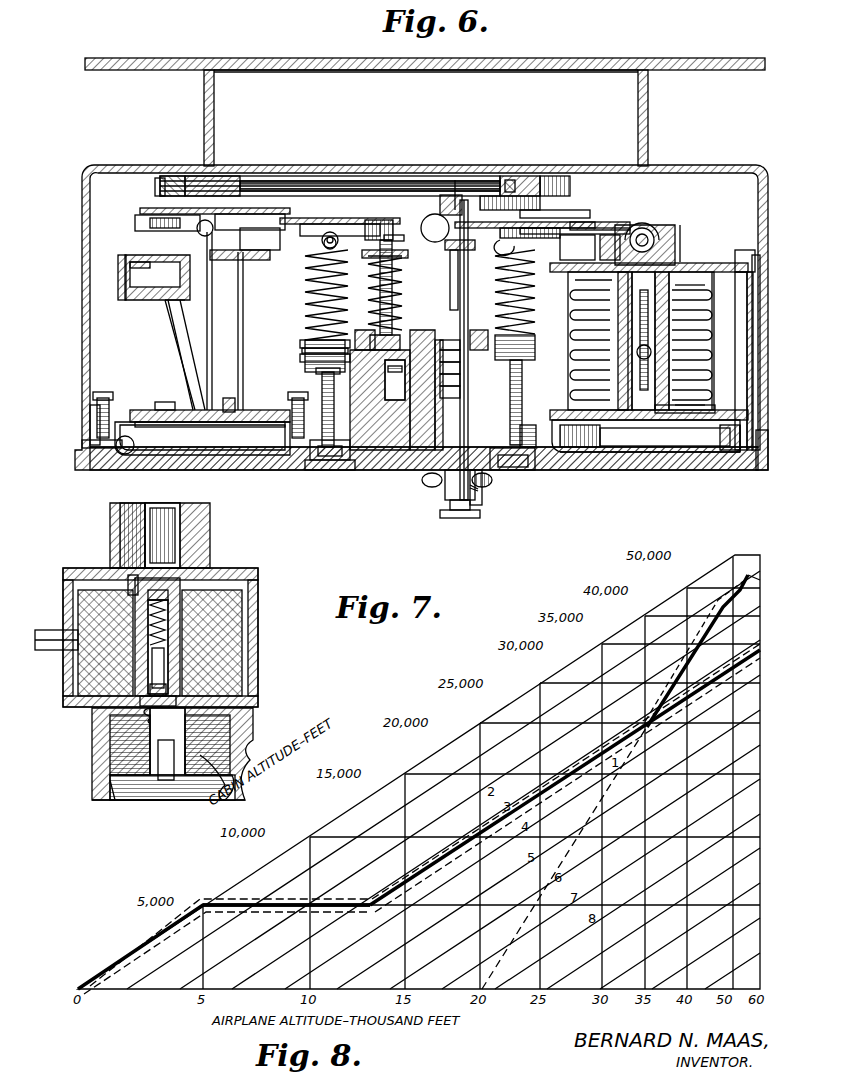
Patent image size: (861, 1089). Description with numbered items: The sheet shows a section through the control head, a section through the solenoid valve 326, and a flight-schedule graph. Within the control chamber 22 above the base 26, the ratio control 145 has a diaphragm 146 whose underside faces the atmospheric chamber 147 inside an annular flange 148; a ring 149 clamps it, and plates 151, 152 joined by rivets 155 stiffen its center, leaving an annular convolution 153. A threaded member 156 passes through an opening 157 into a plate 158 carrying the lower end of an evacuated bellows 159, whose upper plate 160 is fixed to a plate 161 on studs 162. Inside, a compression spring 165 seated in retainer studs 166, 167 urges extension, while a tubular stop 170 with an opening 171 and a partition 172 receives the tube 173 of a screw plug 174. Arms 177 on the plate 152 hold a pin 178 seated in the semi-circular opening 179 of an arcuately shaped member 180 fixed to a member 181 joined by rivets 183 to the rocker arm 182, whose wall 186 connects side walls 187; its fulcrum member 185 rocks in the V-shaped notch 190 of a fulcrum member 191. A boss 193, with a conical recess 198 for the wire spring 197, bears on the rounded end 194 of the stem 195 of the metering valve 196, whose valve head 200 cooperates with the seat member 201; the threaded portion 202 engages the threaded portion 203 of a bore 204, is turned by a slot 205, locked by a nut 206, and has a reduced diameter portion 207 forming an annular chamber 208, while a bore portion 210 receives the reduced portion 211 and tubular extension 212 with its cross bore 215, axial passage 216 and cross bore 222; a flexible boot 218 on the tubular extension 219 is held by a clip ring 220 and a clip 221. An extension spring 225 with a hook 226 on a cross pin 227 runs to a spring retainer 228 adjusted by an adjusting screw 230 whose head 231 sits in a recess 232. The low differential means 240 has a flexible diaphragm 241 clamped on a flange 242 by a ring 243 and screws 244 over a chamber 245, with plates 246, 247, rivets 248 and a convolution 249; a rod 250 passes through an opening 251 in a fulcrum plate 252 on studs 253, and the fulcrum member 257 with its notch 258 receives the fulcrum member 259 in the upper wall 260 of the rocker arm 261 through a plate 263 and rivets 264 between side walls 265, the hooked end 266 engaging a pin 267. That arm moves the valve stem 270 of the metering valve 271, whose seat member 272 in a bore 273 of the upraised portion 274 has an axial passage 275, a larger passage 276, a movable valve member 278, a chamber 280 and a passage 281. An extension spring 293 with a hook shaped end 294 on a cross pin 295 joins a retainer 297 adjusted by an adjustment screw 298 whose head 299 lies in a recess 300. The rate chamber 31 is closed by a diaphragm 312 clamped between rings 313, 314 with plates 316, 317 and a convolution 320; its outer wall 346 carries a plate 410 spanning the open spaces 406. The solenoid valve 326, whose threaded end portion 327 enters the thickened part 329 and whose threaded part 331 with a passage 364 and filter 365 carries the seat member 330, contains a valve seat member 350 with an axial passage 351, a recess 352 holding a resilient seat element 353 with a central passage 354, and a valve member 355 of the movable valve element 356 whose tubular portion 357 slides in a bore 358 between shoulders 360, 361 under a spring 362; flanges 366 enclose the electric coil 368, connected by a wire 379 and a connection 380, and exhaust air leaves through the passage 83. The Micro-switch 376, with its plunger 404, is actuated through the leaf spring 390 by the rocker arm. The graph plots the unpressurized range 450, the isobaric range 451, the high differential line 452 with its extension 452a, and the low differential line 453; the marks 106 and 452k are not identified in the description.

In FIG. 6, the housing 22 is at (122, 192).
In FIG. 6, the base plate 26 is at (628, 470).
In FIG. 6, the mounting panel 31 is at (572, 102).
In FIG. 7, the passage 83 is at (215, 790).
In FIG. 6, the bracket 106 is at (505, 260).
In FIG. 6, the casing wall 145 is at (712, 246).
In FIG. 6, the chamber 146 is at (600, 430).
In FIG. 6, the bottom wall 147 is at (672, 455).
In FIG. 6, the flange 148 is at (768, 433).
In FIG. 6, the wall 149 is at (738, 430).
In FIG. 6, the chamber wall 151 is at (706, 430).
In FIG. 6, the plate 152 is at (705, 395).
In FIG. 6, the partition 153 is at (745, 455).
In FIG. 6, the chamber plate 155 is at (665, 430).
In FIG. 6, the leaf spring stack 156 is at (700, 335).
In FIG. 6, the bottom plate 157 is at (580, 425).
In FIG. 6, the leaf 158 is at (705, 378).
In FIG. 6, the liner 159 is at (740, 265).
In FIG. 6, the spring cage 160 is at (568, 292).
In FIG. 6, the top plate 161 is at (696, 265).
In FIG. 6, the cage wall 162 is at (710, 300).
In FIG. 6, the casing wall 165 is at (762, 280).
In FIG. 6, the leaf springs 166 is at (705, 355).
In FIG. 6, the post 167 is at (683, 262).
In FIG. 6, the stem 170 is at (572, 350).
In FIG. 6, the leaf 171 is at (705, 318).
In FIG. 6, the guide 172 is at (574, 335).
In FIG. 6, the leaf springs 173 is at (575, 310).
In FIG. 6, the plate 174 is at (588, 230).
In FIG. 6, the bracket 177 is at (598, 222).
In FIG. 6, the roller bracket 178 is at (645, 228).
In FIG. 6, the roller 179 is at (642, 228).
In FIG. 6, the support 180 is at (645, 240).
In FIG. 6, the block 181 is at (575, 185).
In FIG. 6, the block 182 is at (522, 210).
In FIG. 6, the plate 183 is at (568, 210).
In FIG. 6, the block 185 is at (568, 246).
In FIG. 6, the block 186 is at (478, 176).
In FIG. 6, the insert 187 is at (508, 180).
In FIG. 6, the block 190 is at (603, 247).
In FIG. 6, the top leaf 191 is at (566, 280).
In FIG. 6, the block 193 is at (452, 195).
In FIG. 6, the plate 194 is at (452, 250).
In FIG. 6, the rod 195 is at (452, 280).
In FIG. 6, the block 196 is at (398, 335).
In FIG. 6, the rod 197 is at (440, 230).
In FIG. 6, the ring 198 is at (448, 232).
In FIG. 6, the valve seat 200 is at (473, 378).
In FIG. 6, the port 201 is at (482, 492).
In FIG. 6, the fitting 202 is at (452, 518).
In FIG. 6, the passage 203 is at (488, 495).
In FIG. 6, the nut 204 is at (455, 510).
In FIG. 6, the nipple 205 is at (460, 510).
In FIG. 6, the nipple 206 is at (492, 481).
In FIG. 6, the valve 207 is at (473, 403).
In FIG. 6, the body 208 is at (450, 500).
In FIG. 6, the valve rod 210 is at (460, 320).
In FIG. 6, the valve member 211 is at (473, 390).
In FIG. 6, the collar 212 is at (473, 353).
In FIG. 6, the collar 215 is at (473, 365).
In FIG. 6, the stem 216 is at (482, 505).
In FIG. 6, the link 218 is at (410, 335).
In FIG. 6, the pivot 219 is at (492, 345).
In FIG. 6, the sleeve 220 is at (440, 452).
In FIG. 6, the spring 221 is at (486, 330).
In FIG. 6, the adjusting screw 222 is at (524, 392).
In FIG. 6, the cage wall 225 is at (590, 322).
In FIG. 6, the plate 226 is at (560, 224).
In FIG. 6, the hook 227 is at (500, 246).
In FIG. 6, the bellows 228 is at (536, 350).
In FIG. 6, the nut 230 is at (545, 465).
In FIG. 6, the lock nut 231 is at (530, 468).
In FIG. 6, the washer 232 is at (520, 470).
In FIG. 6, the block 240 is at (126, 262).
In FIG. 6, the plate 241 is at (218, 424).
In FIG. 6, the pivot 242 is at (125, 455).
In FIG. 6, the flange 243 is at (90, 420).
In FIG. 6, the wall 244 is at (95, 405).
In FIG. 6, the chamber 245 is at (182, 455).
In FIG. 6, the plate 246 is at (180, 422).
In FIG. 6, the post 247 is at (228, 398).
In FIG. 6, the spacer 248 is at (180, 388).
In FIG. 6, the screw 249 is at (110, 395).
In FIG. 6, the rod 250 is at (240, 300).
In FIG. 6, the rod 251 is at (207, 270).
In FIG. 6, the plate 252 is at (318, 315).
In FIG. 6, the plate 253 is at (320, 345).
In FIG. 6, the plate 257 is at (262, 258).
In FIG. 6, the pivot 258 is at (324, 243).
In FIG. 6, the block 259 is at (270, 240).
In FIG. 6, the pivot 260 is at (338, 234).
In FIG. 6, the bracket 261 is at (154, 213).
In FIG. 6, the plate 263 is at (262, 214).
In FIG. 6, the plate 264 is at (295, 210).
In FIG. 6, the block 265 is at (392, 230).
In FIG. 6, the plate 266 is at (142, 214).
In FIG. 6, the pivot 267 is at (205, 220).
In FIG. 6, the spring 270 is at (372, 275).
In FIG. 6, the seat 271 is at (360, 330).
In FIG. 6, the plate 272 is at (318, 325).
In FIG. 6, the body 273 is at (380, 450).
In FIG. 6, the body 274 is at (395, 450).
In FIG. 6, the boss 275 is at (375, 452).
In FIG. 6, the stem 276 is at (394, 292).
In FIG. 6, the seat 278 is at (372, 290).
In FIG. 6, the chamber 280 is at (405, 452).
In FIG. 6, the valve 281 is at (418, 452).
In FIG. 6, the bellows 293 is at (310, 350).
In FIG. 6, the lever 294 is at (330, 226).
In FIG. 6, the spring 295 is at (290, 255).
In FIG. 6, the screw 297 is at (320, 384).
In FIG. 6, the screw 298 is at (292, 420).
In FIG. 6, the plate 299 is at (312, 472).
In FIG. 6, the nut 300 is at (322, 462).
In FIG. 6, the diaphragm 312 is at (345, 185).
In FIG. 6, the block 313 is at (176, 178).
In FIG. 6, the clamp 314 is at (170, 178).
In FIG. 6, the plate 316 is at (292, 185).
In FIG. 6, the plate 317 is at (392, 185).
In FIG. 6, the block 320 is at (235, 180).
In FIG. 7, the solenoid valve 326 is at (262, 580).
In FIG. 7, the threaded body 327 is at (115, 762).
In FIG. 7, the bottom 329 is at (105, 795).
In FIG. 7, the cap 330 is at (110, 522).
In FIG. 7, the thread 331 is at (118, 540).
In FIG. 6, the bracket 346 is at (500, 80).
In FIG. 7, the chamber 350 is at (140, 795).
In FIG. 7, the port 351 is at (162, 800).
In FIG. 7, the body 352 is at (120, 735).
In FIG. 7, the seat 353 is at (175, 726).
In FIG. 7, the wall 354 is at (118, 800).
In FIG. 7, the valve 355 is at (175, 718).
In FIG. 7, the valve head 356 is at (180, 690).
In FIG. 7, the stem 357 is at (190, 670).
In FIG. 7, the plate 358 is at (185, 708).
In FIG. 7, the spring 360 is at (175, 640).
In FIG. 7, the plunger 361 is at (178, 590).
In FIG. 7, the seat 362 is at (172, 605).
In FIG. 7, the bore 364 is at (175, 540).
In FIG. 7, the sleeve 365 is at (128, 580).
In FIG. 7, the end plates 366 is at (68, 570).
In FIG. 7, the coil 368 is at (100, 668).
In FIG. 6, the arm 376 is at (168, 305).
In FIG. 7, the lead 379 is at (45, 632).
In FIG. 7, the coil 380 is at (100, 655).
In FIG. 6, the lever 390 is at (180, 345).
In FIG. 6, the block 404 is at (160, 295).
In FIG. 6, the panel 406 is at (138, 104).
In FIG. 6, the mounting plate 410 is at (208, 58).
In FIG. 8, the curve segment 450 is at (148, 930).
In FIG. 8, the curve segment 451 is at (258, 905).
In FIG. 8, the curve segment 452 is at (680, 668).
In FIG. 8, the curve 452a is at (616, 790).
In FIG. 8, the curve end 452k is at (760, 572).
In FIG. 8, the curve segment 453 is at (742, 575).